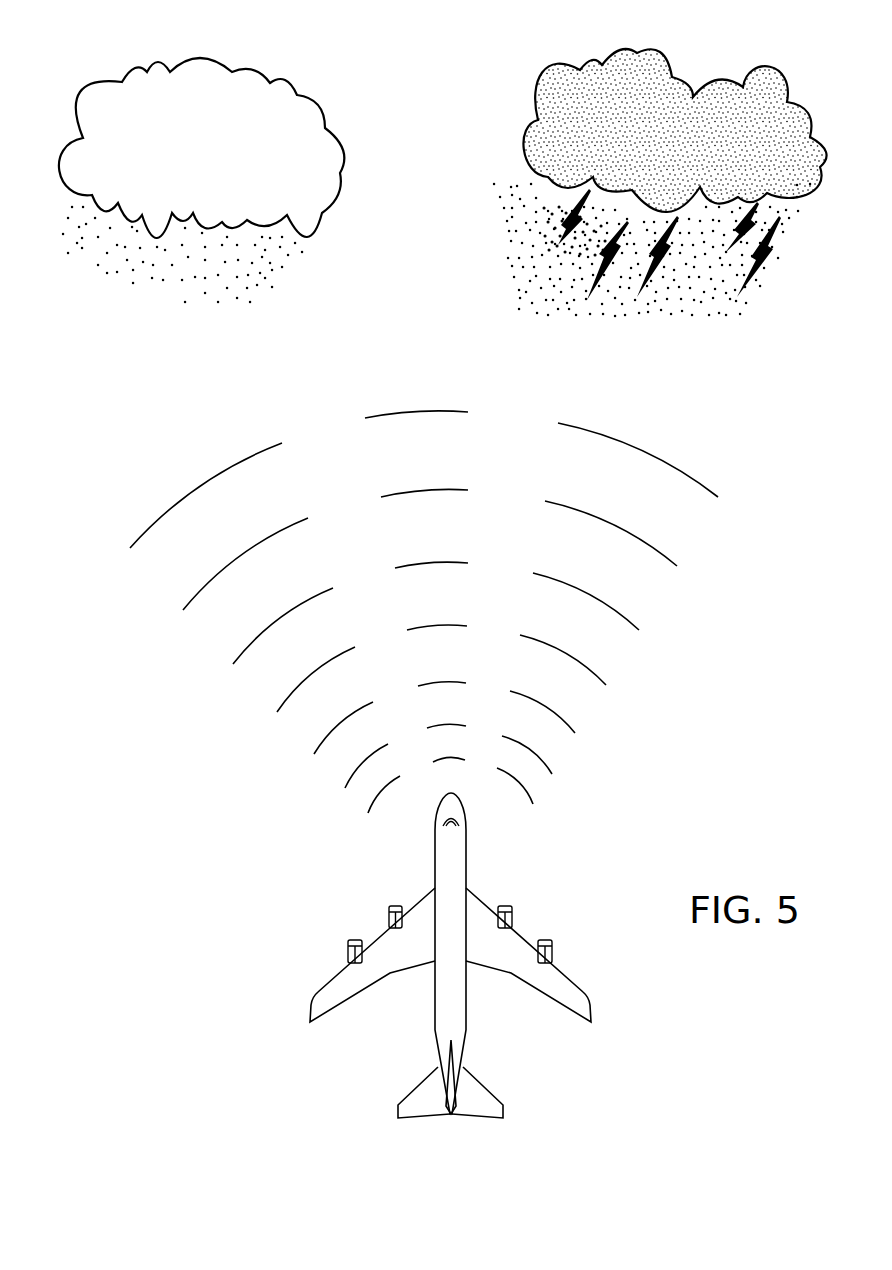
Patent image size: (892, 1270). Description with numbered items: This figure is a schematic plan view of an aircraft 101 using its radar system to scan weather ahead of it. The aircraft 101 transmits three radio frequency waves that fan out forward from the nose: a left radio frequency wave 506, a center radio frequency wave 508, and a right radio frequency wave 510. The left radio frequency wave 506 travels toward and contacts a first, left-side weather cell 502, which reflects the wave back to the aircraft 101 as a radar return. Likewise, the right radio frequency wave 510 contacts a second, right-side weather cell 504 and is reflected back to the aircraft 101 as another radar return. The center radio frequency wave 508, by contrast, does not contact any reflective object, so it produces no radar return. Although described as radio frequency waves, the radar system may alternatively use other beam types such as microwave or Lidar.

The aircraft 101 is at (324, 1000).
The first weather cell 502 is at (303, 120).
The second weather cell 504 is at (650, 63).
The left radio frequency wave 506 is at (208, 485).
The center radio frequency wave 508 is at (413, 410).
The right radio frequency wave 510 is at (662, 460).